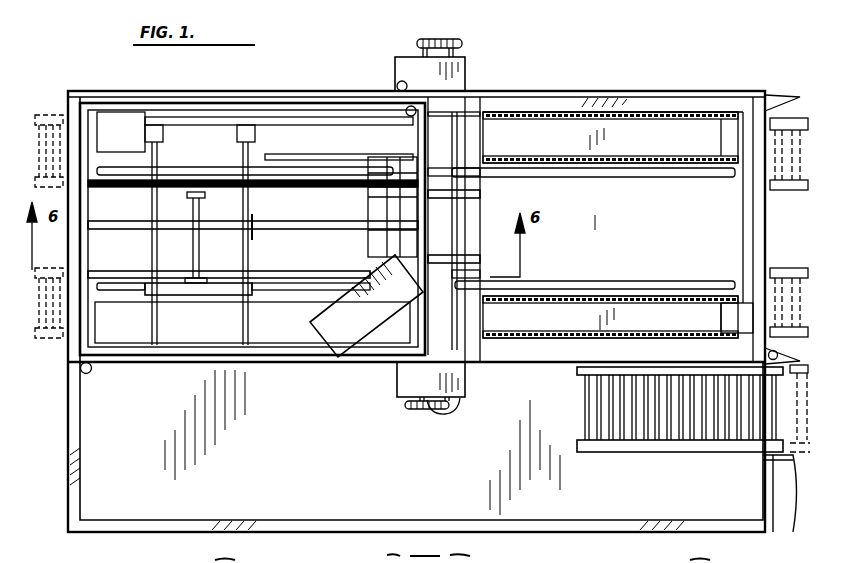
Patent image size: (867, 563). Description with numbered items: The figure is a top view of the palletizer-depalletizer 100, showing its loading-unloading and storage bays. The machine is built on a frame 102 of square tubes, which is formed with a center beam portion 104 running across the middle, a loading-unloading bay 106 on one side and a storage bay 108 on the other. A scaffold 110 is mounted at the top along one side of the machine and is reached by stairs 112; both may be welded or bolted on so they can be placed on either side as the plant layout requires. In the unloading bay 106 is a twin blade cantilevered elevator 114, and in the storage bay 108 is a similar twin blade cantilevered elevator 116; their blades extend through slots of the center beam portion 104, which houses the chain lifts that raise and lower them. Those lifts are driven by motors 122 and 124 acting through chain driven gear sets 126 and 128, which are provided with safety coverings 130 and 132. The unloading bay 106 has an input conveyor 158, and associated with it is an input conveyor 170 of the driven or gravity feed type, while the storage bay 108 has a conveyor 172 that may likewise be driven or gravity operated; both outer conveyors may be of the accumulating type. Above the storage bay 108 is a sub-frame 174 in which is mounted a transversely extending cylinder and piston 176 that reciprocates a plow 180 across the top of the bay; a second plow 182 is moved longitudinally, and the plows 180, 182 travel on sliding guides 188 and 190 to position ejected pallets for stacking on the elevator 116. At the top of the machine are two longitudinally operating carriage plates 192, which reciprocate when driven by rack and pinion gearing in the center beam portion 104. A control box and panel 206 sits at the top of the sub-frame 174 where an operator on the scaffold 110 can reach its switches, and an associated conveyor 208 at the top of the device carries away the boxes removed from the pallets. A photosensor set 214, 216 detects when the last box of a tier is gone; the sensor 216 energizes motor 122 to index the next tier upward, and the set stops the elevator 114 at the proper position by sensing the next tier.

The palletizer-depalletizer 100 is at (582, 60).
The frame 102 is at (532, 97).
The center beam portion 104 is at (480, 193).
The loading-unloading bay 106 is at (637, 232).
The storage bay 108 is at (115, 208).
The scaffold 110 is at (207, 492).
The stairs 112 is at (783, 512).
The twin blade cantilevered elevator 114 is at (460, 147).
The twin blade cantilevered elevator 116 is at (295, 290).
The motor 122 is at (410, 50).
The motor 124 is at (445, 405).
The chain driven gear set 126 is at (447, 42).
The chain driven gear set 128 is at (417, 405).
The safety covering 130 is at (400, 398).
The safety covering 132 is at (466, 72).
The input conveyor 158 is at (665, 133).
The input conveyor 170 is at (808, 115).
The conveyor 172 is at (48, 100).
The sub-frame 174 is at (195, 100).
The transversely extending cylinder and piston 176 is at (207, 249).
The plow 180 is at (248, 116).
The plow 182 is at (408, 185).
The sliding guide 188 is at (240, 316).
The sliding guide 190 is at (316, 272).
The carriage plate 192 is at (303, 117).
The control box and panel 206 is at (347, 360).
The conveyor 208 is at (660, 447).
The photosensor 214 is at (763, 350).
The photosensor 216 is at (406, 108).